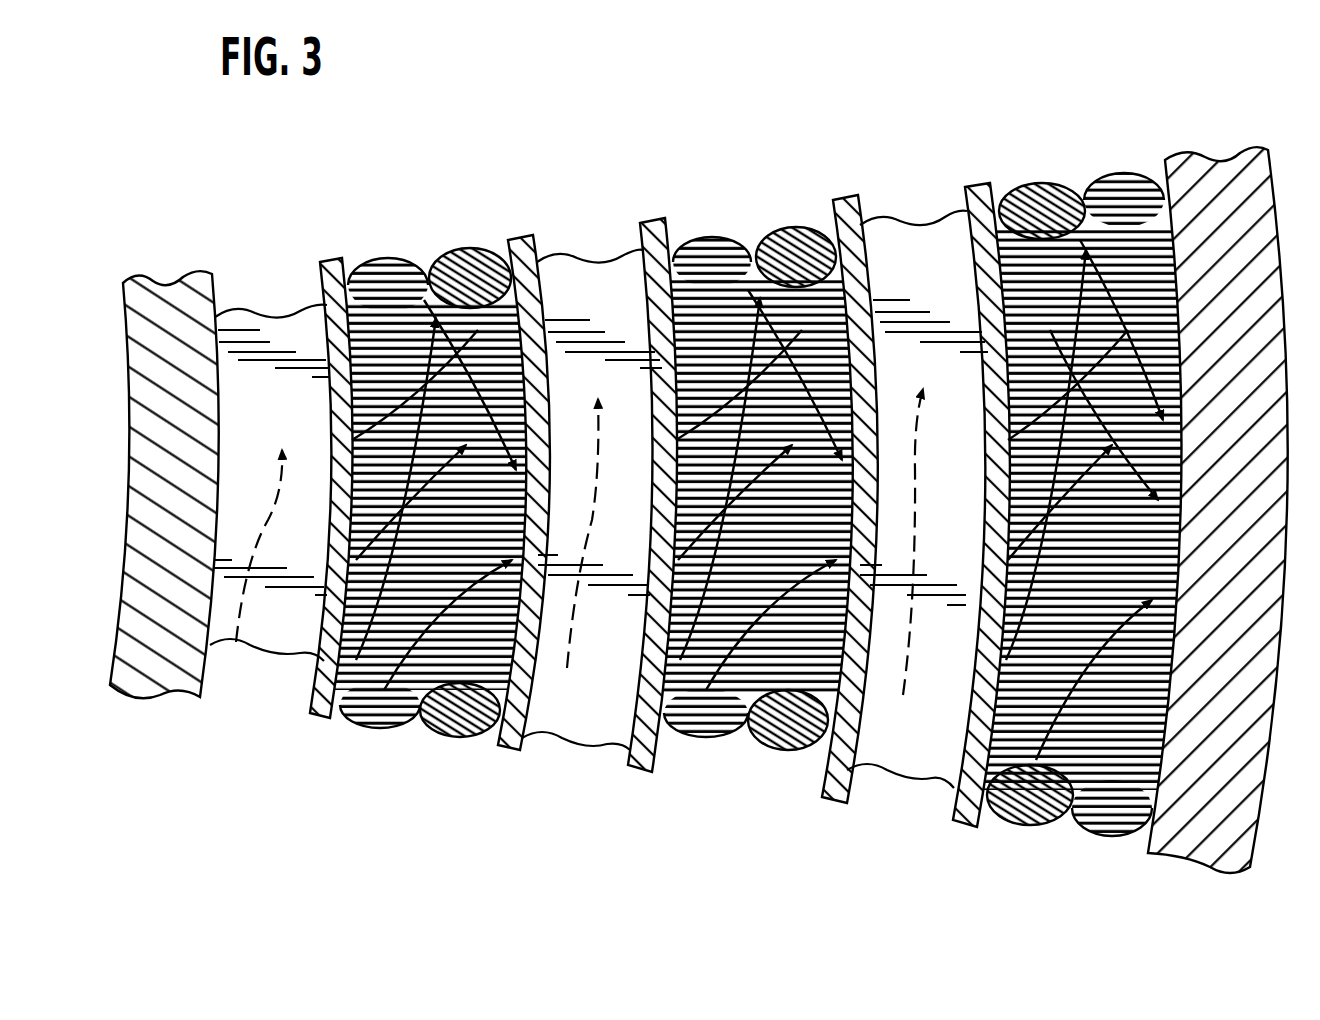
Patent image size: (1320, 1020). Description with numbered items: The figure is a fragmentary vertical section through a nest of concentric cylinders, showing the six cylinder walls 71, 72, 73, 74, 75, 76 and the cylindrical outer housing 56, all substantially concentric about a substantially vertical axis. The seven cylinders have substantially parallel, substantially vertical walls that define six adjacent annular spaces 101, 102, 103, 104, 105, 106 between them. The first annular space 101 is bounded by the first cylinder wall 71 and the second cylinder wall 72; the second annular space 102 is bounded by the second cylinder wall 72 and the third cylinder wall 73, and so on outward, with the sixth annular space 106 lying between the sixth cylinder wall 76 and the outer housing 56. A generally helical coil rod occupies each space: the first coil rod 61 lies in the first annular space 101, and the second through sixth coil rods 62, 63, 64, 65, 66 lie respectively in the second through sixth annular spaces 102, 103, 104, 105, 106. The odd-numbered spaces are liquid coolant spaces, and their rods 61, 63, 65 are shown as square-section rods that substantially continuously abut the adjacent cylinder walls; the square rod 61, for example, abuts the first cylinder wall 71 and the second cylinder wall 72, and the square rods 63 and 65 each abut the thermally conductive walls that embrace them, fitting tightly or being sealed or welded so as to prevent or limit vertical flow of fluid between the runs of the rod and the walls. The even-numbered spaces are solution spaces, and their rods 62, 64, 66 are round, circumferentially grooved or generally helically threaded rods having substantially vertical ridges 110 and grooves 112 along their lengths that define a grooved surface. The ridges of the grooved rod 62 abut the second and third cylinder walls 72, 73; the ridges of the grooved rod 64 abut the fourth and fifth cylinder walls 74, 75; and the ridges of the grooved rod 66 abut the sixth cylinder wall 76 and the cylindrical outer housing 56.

The cylindrical outer housing 56 is at (1200, 160).
The first generally helical coil rod 61 is at (223, 637).
The second generally helical coil rod 62 is at (385, 702).
The third generally helical coil rod 63 is at (555, 718).
The fourth generally helical coil rod 64 is at (710, 722).
The fifth generally helical coil rod 65 is at (898, 752).
The sixth generally helical coil rod 66 is at (1037, 760).
The first cylinder wall 71 is at (172, 281).
The second cylinder wall 72 is at (330, 262).
The third cylinder wall 73 is at (520, 240).
The fourth cylinder wall 74 is at (650, 222).
The fifth cylinder wall 75 is at (848, 200).
The sixth cylinder wall 76 is at (978, 186).
The first annular space 101 is at (285, 682).
The second annular space 102 is at (423, 726).
The third annular space 103 is at (578, 752).
The fourth annular space 104 is at (745, 746).
The fifth annular space 105 is at (927, 802).
The sixth annular space 106 is at (1072, 832).
The ridge 110 is at (372, 260).
The groove 112 is at (392, 262).